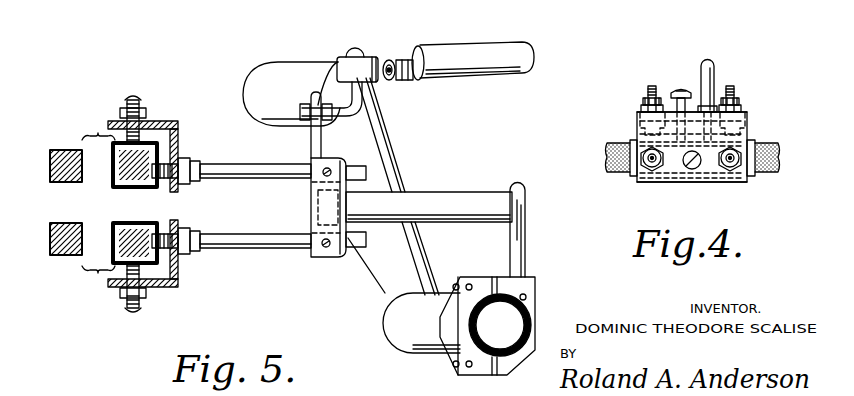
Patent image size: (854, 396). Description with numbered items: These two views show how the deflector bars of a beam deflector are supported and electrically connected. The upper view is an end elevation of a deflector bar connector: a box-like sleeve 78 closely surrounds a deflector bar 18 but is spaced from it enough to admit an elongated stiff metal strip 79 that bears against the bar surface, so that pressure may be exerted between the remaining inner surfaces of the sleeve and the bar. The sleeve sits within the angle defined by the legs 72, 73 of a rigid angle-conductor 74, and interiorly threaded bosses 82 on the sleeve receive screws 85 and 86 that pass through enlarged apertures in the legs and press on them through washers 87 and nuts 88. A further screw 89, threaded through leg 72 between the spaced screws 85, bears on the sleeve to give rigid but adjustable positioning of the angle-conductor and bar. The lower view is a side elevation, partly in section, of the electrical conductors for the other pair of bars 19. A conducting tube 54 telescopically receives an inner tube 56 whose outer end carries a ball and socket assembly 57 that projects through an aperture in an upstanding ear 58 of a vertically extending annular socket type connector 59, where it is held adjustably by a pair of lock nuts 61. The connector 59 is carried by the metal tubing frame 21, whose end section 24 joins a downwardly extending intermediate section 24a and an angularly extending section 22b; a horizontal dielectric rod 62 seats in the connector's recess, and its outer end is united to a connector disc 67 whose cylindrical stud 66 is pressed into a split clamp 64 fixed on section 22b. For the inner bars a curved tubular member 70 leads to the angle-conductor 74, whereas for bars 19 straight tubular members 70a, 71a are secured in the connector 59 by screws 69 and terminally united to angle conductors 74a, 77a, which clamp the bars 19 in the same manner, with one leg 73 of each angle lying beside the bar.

In FIG. 5, the deflector bars 18 is at (74, 223).
In FIG. 4, the deflector bars 18 is at (779, 161).
In FIG. 5, the deflector bars 19 is at (140, 223).
In FIG. 5, the frame 21 is at (386, 348).
In FIG. 5, the angularly extending section 22b is at (500, 325).
In FIG. 5, the end section 24 is at (312, 62).
In FIG. 5, the intermediate section 24a is at (396, 156).
In FIG. 5, the conducting tube 54 is at (486, 50).
In FIG. 5, the inner tube 56 is at (405, 58).
In FIG. 5, the ball and socket assembly 57 is at (388, 84).
In FIG. 5, the upstanding ear 58 is at (311, 140).
In FIG. 5, the socket type connector 59 is at (311, 195).
In FIG. 5, the lock nuts 61 is at (306, 108).
In FIG. 5, the rod 62 is at (476, 192).
In FIG. 5, the split clamp 64 is at (536, 306).
In FIG. 5, the cylindrical stud 66 is at (526, 258).
In FIG. 5, the connector disc 67 is at (519, 183).
In FIG. 5, the screws 69 is at (331, 170).
In FIG. 4, the curved tubular member 70 is at (709, 66).
In FIG. 5, the straight tubular member 70a is at (250, 164).
In FIG. 5, the straight tubular member 71a is at (250, 250).
In FIG. 4, the leg 72 is at (671, 112).
In FIG. 4, the leg 73 is at (650, 170).
In FIG. 4, the angle-conductor 74 is at (735, 185).
In FIG. 5, the angle conductor 74a is at (168, 116).
In FIG. 5, the angle conductor 77a is at (170, 292).
In FIG. 4, the sleeve 78 is at (630, 141).
In FIG. 4, the strip 79 is at (756, 142).
In FIG. 4, the threaded boss 82 is at (640, 124).
In FIG. 4, the screws 85 is at (652, 86).
In FIG. 4, the screw 86 is at (720, 172).
In FIG. 4, the washers 87 is at (641, 106).
In FIG. 4, the nuts 88 is at (647, 99).
In FIG. 4, the screw 89 is at (681, 90).